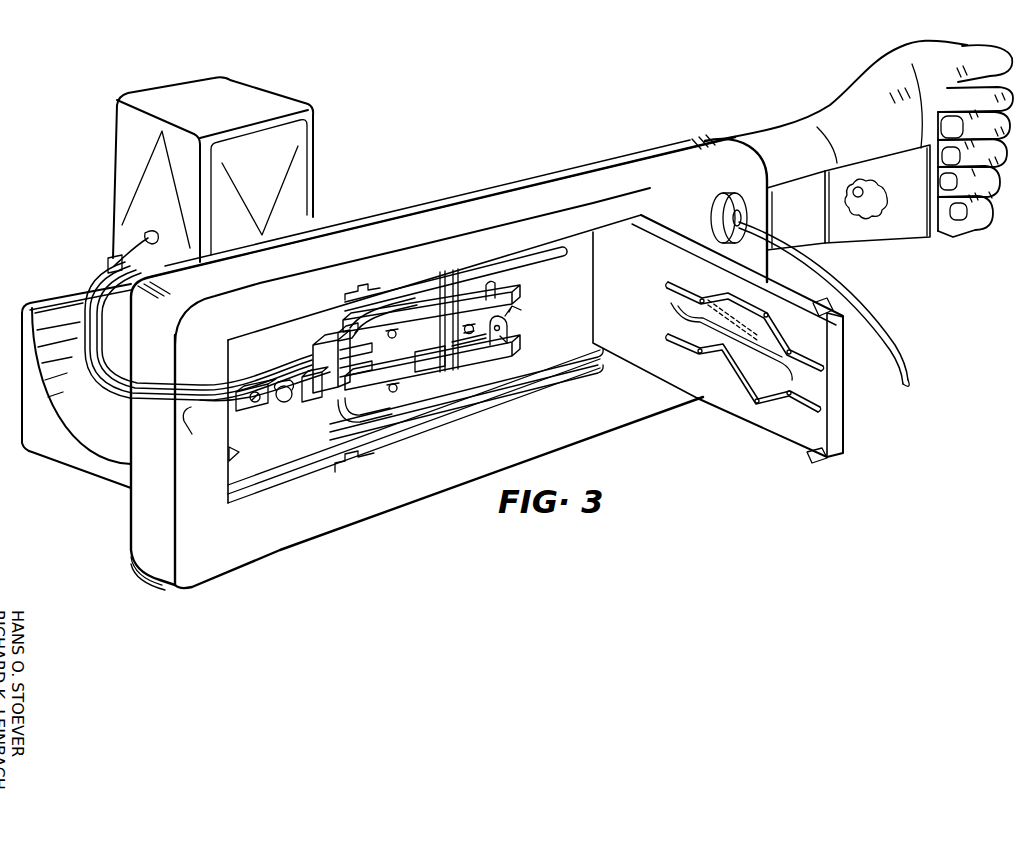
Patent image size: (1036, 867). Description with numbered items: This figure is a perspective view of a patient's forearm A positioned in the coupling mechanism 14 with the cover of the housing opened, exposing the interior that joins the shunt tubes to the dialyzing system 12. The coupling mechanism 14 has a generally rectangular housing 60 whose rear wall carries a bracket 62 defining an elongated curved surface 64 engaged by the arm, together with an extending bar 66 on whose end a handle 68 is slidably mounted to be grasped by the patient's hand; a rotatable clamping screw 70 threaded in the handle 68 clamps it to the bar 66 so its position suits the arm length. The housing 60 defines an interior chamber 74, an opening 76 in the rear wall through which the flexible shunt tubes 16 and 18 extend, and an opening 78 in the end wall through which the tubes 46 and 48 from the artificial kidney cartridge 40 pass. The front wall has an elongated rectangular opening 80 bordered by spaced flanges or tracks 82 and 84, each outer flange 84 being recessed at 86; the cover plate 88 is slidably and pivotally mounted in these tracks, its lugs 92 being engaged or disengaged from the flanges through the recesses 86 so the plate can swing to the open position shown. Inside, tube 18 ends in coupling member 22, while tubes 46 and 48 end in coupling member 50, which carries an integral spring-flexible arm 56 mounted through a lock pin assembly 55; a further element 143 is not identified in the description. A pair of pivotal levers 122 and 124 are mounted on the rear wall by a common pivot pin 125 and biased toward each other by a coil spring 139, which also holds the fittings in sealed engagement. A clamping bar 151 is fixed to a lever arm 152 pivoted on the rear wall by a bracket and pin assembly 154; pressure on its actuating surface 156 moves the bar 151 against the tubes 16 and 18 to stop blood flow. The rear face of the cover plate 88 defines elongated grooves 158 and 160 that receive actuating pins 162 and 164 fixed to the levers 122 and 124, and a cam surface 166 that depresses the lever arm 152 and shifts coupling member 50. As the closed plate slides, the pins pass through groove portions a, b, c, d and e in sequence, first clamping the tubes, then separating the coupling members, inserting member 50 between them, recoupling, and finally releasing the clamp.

The dialyzing system 12 is at (97, 208).
The coupling mechanism 14 is at (512, 170).
The flexible tube 16 is at (343, 422).
The flexible tube 18 is at (541, 255).
The coupling member 22 is at (347, 332).
The dialyzing device 40 is at (268, 98).
The tube 46 is at (249, 378).
The tube 48 is at (145, 407).
The coupling member 50 is at (314, 350).
The lock pin assembly 55 is at (283, 403).
The arm 56 is at (314, 397).
The housing 60 is at (217, 566).
The bracket 62 is at (87, 478).
The elongated curved surface 64 is at (85, 440).
The extending bar 66 is at (810, 218).
The handle 68 is at (848, 226).
The clamping screw 70 is at (883, 206).
The interior chamber 74 is at (280, 471).
The opening 76 is at (497, 287).
The opening 78 is at (187, 436).
The rectangular opening 80 is at (232, 456).
The flange 82 is at (422, 421).
The outer flange 84 is at (465, 418).
The recess 86 is at (357, 293).
The cover plate 88 is at (757, 424).
The lugs 92 is at (827, 299).
The pivotal lever 122 is at (482, 371).
The pivotal lever 124 is at (468, 298).
The pivot pin 125 is at (504, 330).
The coil spring 139 is at (518, 317).
The block 143 is at (250, 406).
The clamping bar 151 is at (458, 280).
The lever arm 152 is at (462, 340).
The bracket and pin assembly 154 is at (472, 324).
The actuating surface 156 is at (432, 362).
The elongated groove 158 is at (687, 344).
The elongated groove 160 is at (747, 287).
The actuating pin 162 is at (394, 393).
The actuating pin 164 is at (392, 329).
The cam surface 166 is at (735, 352).
The forearm A is at (759, 140).
The parallel groove portions a is at (810, 352).
The groove portions b is at (781, 324).
The parallel groove portions c is at (745, 307).
The groove portions d is at (722, 297).
The groove portions e is at (667, 288).